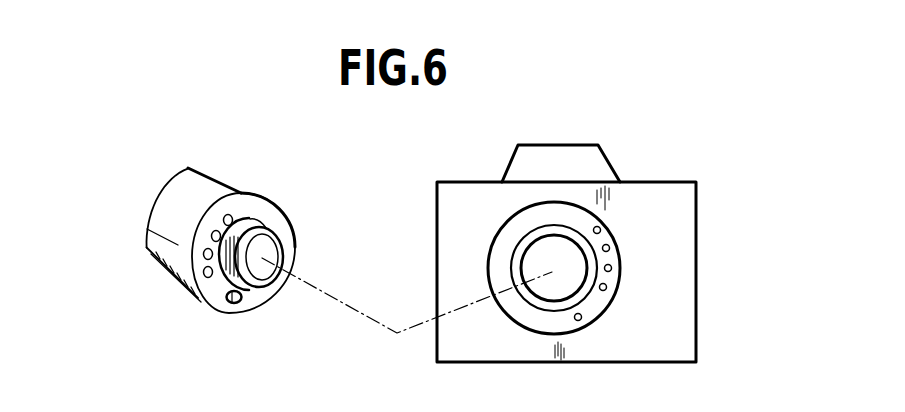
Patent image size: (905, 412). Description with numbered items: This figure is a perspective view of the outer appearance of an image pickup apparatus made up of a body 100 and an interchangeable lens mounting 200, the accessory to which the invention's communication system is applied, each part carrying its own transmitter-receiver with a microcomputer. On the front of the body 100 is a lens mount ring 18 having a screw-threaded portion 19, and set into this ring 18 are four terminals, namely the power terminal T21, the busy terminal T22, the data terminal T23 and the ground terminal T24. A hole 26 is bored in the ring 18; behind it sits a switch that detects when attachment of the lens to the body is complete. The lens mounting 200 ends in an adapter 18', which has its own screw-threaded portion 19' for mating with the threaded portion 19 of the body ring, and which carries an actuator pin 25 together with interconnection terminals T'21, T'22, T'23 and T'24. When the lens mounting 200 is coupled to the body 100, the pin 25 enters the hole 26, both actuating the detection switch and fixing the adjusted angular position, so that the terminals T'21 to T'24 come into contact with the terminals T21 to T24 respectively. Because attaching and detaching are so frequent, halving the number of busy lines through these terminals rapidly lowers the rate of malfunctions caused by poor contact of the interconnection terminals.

The interchangeable lens mounting 200 is at (252, 180).
The body 100 is at (653, 182).
The screw-threaded portion 19' is at (279, 243).
The adapter 18' is at (287, 270).
The interconnection terminal T'21 is at (150, 218).
The interconnection terminal T'22 is at (144, 249).
The interconnection terminal T'23 is at (144, 278).
The interconnection terminal T'24 is at (155, 303).
The actuator pin 25 is at (234, 305).
The lens mount ring 18 is at (566, 303).
The screw-threaded portion 19 is at (547, 314).
The power terminal T21 is at (600, 229).
The busy terminal T22 is at (609, 248).
The data terminal T23 is at (611, 268).
The ground terminal T24 is at (606, 288).
The hole 26 is at (580, 319).